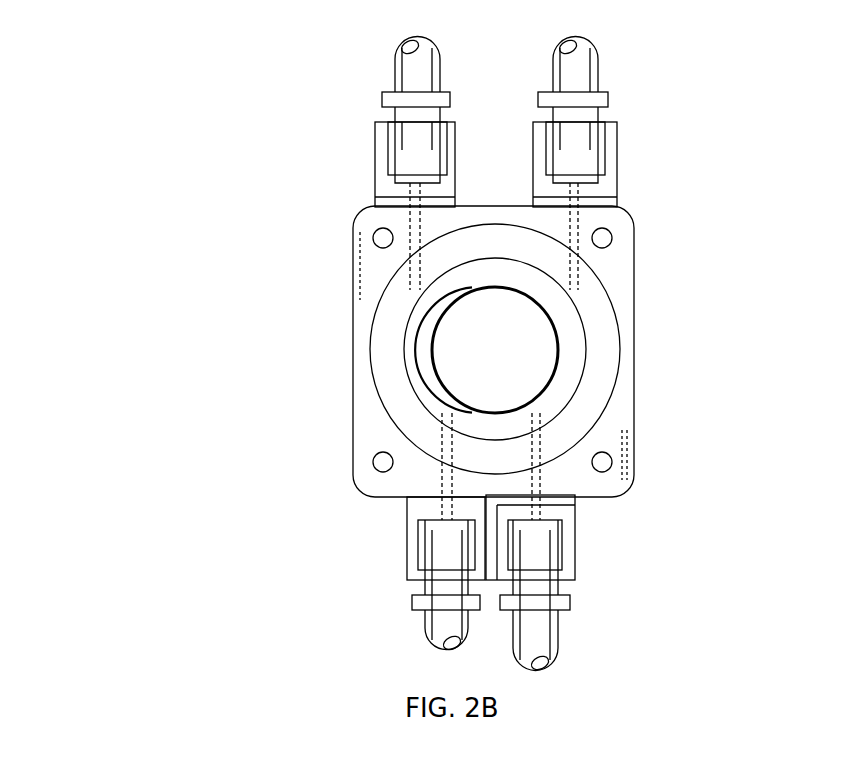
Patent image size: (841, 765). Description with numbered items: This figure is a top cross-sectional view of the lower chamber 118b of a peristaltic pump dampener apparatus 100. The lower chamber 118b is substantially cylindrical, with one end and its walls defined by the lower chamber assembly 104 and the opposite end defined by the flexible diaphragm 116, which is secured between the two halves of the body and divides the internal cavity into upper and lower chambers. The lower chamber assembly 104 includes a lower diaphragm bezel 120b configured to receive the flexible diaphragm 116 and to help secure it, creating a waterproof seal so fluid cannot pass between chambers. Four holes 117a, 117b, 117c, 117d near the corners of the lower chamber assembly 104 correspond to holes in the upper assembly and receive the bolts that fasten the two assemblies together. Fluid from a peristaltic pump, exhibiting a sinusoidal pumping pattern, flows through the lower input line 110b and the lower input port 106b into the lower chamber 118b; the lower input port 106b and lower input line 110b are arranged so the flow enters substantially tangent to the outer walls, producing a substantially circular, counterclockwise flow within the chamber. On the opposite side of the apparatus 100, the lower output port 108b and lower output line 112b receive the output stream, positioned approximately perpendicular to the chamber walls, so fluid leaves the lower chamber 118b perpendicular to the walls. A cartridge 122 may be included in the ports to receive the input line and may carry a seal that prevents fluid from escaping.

The peristaltic pump dampener apparatus 100 is at (140, 121).
The lower chamber assembly 104 is at (693, 284).
The lower input port 106b is at (375, 142).
The lower output port 108b is at (575, 533).
The lower input line 110b is at (393, 62).
The lower output line 112b is at (558, 628).
The flexible diaphragm 116 is at (540, 333).
The hole 117a is at (612, 458).
The hole 117b is at (372, 462).
The hole 117c is at (372, 238).
The hole 117d is at (612, 238).
The lower chamber 118b is at (420, 390).
The lower diaphragm bezel 120b is at (377, 343).
The cartridge 122 is at (382, 99).